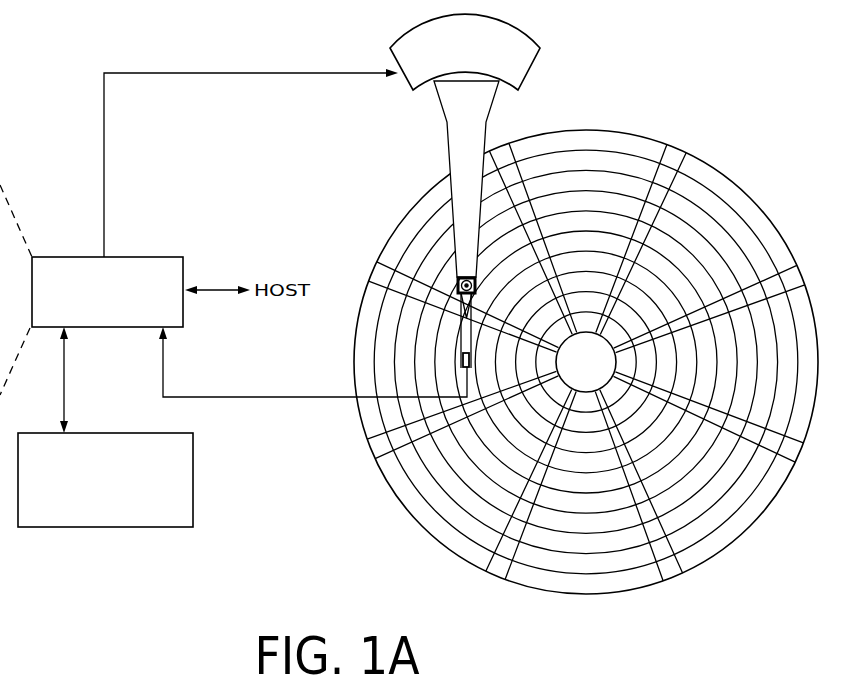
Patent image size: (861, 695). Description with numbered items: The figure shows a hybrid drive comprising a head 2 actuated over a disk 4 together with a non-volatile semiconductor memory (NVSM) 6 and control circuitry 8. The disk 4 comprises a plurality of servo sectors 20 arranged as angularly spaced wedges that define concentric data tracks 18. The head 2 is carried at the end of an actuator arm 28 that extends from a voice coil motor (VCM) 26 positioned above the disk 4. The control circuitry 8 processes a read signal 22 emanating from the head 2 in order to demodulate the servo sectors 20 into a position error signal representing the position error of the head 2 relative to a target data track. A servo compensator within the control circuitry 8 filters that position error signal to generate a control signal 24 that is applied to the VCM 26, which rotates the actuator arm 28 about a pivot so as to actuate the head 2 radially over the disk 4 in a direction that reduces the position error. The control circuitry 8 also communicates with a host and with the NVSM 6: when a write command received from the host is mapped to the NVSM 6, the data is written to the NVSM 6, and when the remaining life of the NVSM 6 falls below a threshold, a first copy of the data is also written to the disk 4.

The head 2 is at (452, 368).
The disk 4 is at (748, 182).
The non-volatile semiconductor memory (NVSM) 6 is at (194, 478).
The control circuitry 8 is at (148, 257).
The data tracks 18 is at (584, 165).
The servo sectors 20 is at (589, 372).
The read signal 22 is at (246, 397).
The control signal 24 is at (104, 150).
The voice coil motor (VCM) 26 is at (412, 86).
The actuator arm 28 is at (446, 160).